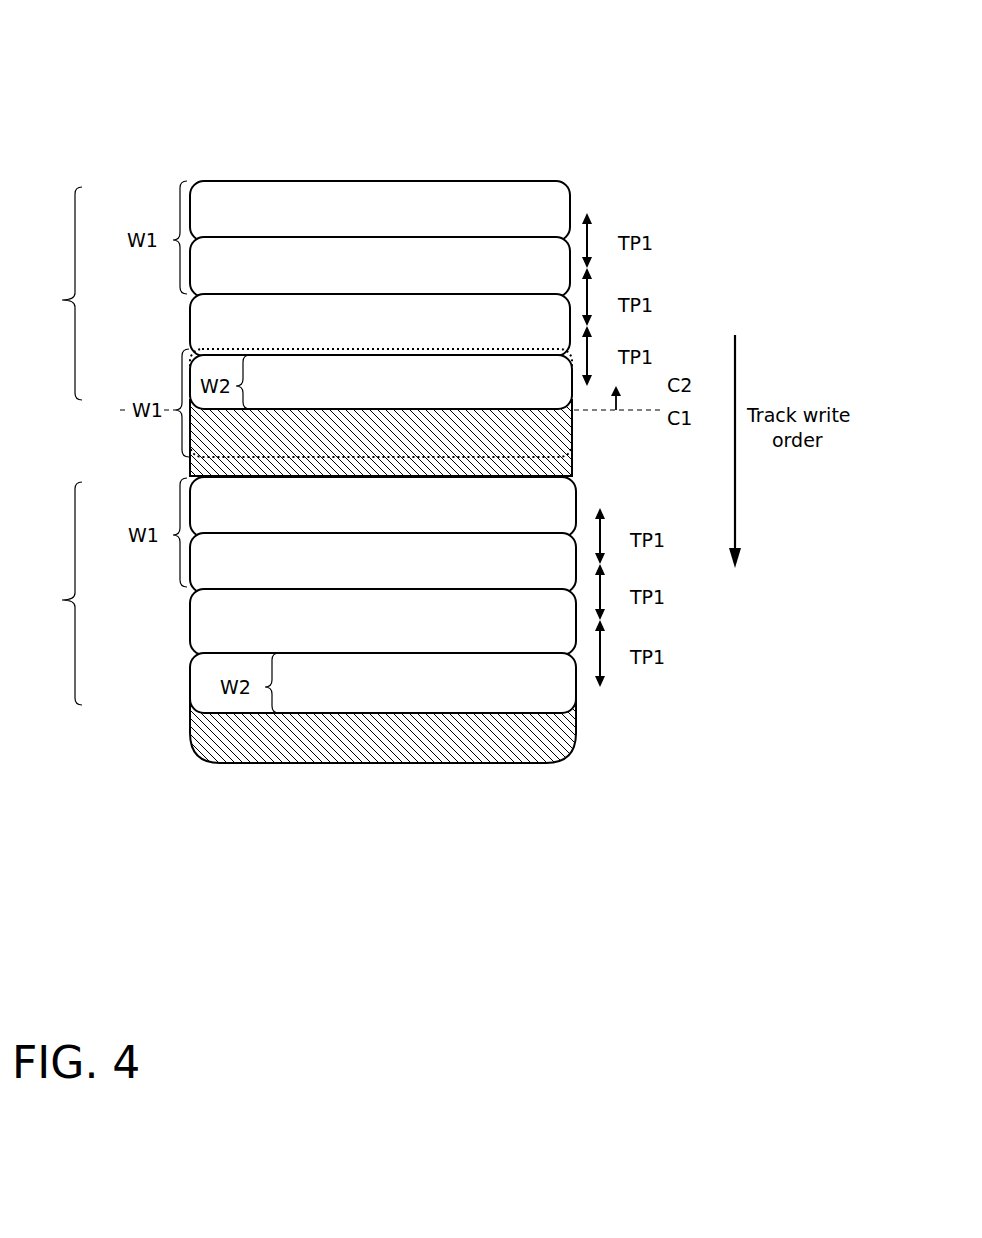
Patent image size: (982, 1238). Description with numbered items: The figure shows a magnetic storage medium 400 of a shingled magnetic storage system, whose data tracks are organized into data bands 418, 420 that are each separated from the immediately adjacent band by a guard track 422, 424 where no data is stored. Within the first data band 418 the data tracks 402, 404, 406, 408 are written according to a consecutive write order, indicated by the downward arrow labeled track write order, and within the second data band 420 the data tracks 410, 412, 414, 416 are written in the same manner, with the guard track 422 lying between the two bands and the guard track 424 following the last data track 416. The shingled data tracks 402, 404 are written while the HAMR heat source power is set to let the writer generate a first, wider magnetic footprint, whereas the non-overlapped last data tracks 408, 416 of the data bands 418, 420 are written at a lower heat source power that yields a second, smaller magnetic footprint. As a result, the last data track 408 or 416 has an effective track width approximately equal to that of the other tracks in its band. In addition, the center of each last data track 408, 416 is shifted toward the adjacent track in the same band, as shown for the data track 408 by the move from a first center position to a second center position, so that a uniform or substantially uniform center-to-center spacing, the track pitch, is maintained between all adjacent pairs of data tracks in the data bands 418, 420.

The magnetic storage medium 400 is at (137, 69).
The shingled data track 402 is at (650, 213).
The shingled data track 404 is at (650, 268).
The data track 406 is at (650, 326).
The last data track 408 is at (660, 386).
The data track 410 is at (652, 508).
The data track 412 is at (652, 564).
The data track 414 is at (652, 620).
The last data track 416 is at (663, 687).
The data band 418 is at (52, 293).
The data band 420 is at (52, 593).
The guard track 422 is at (400, 446).
The guard track 424 is at (400, 751).